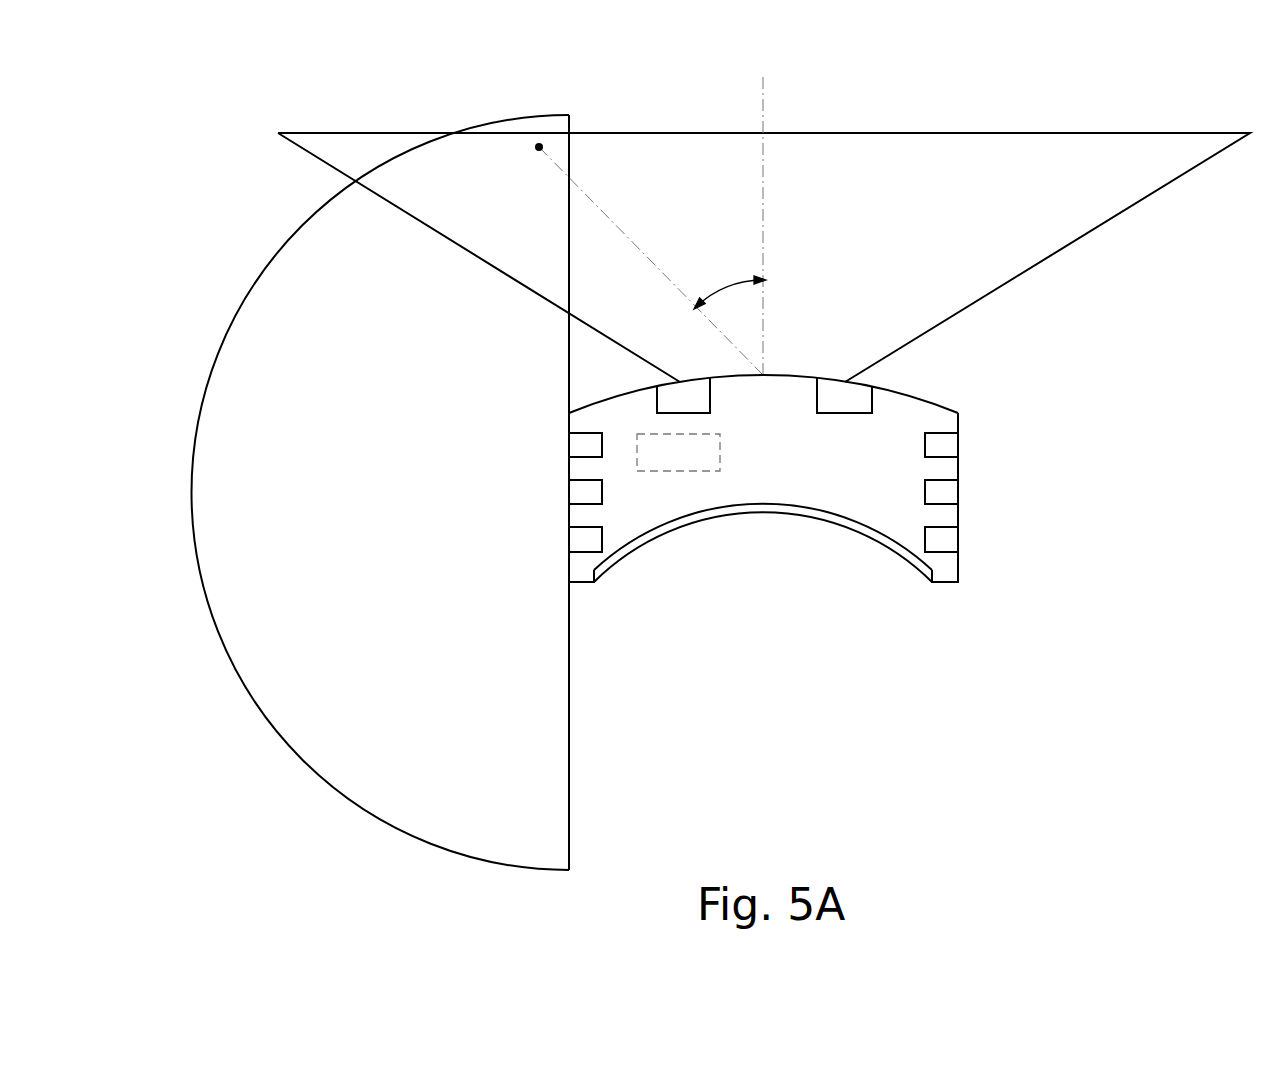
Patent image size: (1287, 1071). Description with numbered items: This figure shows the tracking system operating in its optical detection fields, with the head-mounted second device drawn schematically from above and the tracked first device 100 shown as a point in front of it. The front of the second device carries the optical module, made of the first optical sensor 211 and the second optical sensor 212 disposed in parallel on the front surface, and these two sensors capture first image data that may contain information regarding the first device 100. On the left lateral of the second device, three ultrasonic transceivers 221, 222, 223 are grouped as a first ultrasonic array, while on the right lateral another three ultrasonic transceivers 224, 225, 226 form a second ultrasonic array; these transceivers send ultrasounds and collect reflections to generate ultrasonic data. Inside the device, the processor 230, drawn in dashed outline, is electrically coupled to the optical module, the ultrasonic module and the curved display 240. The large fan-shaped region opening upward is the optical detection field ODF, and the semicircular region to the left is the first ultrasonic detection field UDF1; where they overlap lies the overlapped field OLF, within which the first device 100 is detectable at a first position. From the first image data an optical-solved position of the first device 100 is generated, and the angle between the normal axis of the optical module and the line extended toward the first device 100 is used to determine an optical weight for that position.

The first device 100 is at (539, 145).
The first optical sensor 211 is at (665, 398).
The second optical sensor 212 is at (865, 398).
The ultrasonic transceiver 221 is at (569, 443).
The ultrasonic transceiver 222 is at (569, 491).
The ultrasonic transceiver 223 is at (569, 538).
The ultrasonic transceiver 224 is at (958, 443).
The ultrasonic transceiver 225 is at (958, 491).
The ultrasonic transceiver 226 is at (958, 538).
The processor 230 is at (678, 472).
The display 240 is at (769, 516).
The overlapped field OLF is at (440, 180).
The optical detection field ODF is at (816, 152).
The first ultrasonic detection field UDF1 is at (317, 246).